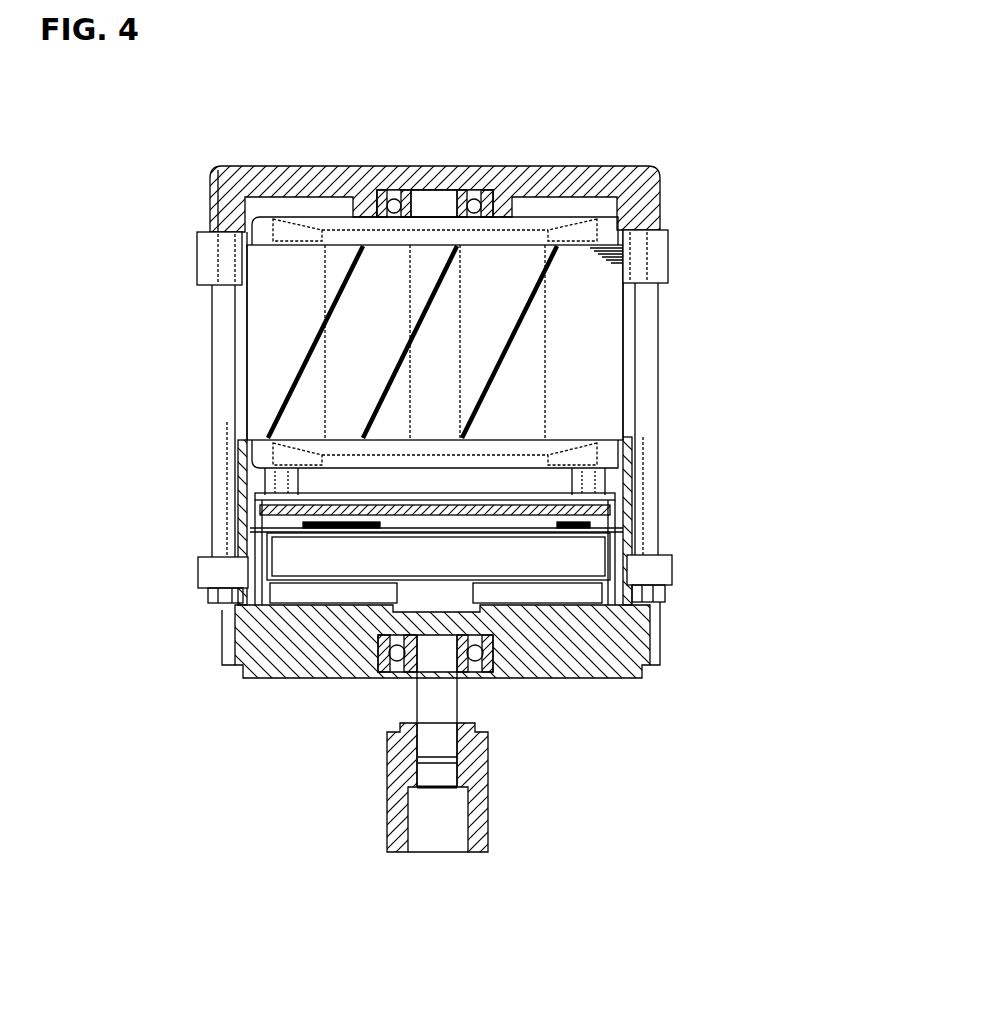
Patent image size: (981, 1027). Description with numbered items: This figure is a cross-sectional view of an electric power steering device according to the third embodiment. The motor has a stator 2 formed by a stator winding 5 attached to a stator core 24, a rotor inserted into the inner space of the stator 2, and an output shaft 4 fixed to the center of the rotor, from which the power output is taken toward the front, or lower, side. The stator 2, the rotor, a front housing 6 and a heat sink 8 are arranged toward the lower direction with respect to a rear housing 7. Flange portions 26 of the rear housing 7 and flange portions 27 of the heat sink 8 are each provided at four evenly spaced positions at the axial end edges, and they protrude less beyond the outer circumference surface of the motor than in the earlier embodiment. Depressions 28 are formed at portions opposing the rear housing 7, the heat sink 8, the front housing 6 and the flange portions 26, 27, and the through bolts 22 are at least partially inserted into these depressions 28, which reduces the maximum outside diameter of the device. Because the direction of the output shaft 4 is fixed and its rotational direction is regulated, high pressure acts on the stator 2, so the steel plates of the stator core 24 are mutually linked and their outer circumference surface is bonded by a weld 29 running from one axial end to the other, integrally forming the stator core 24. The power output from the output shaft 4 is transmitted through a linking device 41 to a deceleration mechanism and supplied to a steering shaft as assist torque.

The stator 2 is at (627, 410).
The output shaft 4 is at (417, 695).
The stator winding 5 is at (588, 213).
The front housing 6 is at (240, 493).
The rear housing 7 is at (660, 180).
The heat sink 8 is at (660, 655).
The through bolts 22 is at (660, 301).
The stator core 24 is at (662, 236).
The flange portions of the rear housing 26 is at (617, 262).
The flange portions of the heat sink 27 is at (672, 562).
The depressions 28 is at (627, 360).
The weld 29 is at (288, 389).
The linking device 41 is at (487, 783).